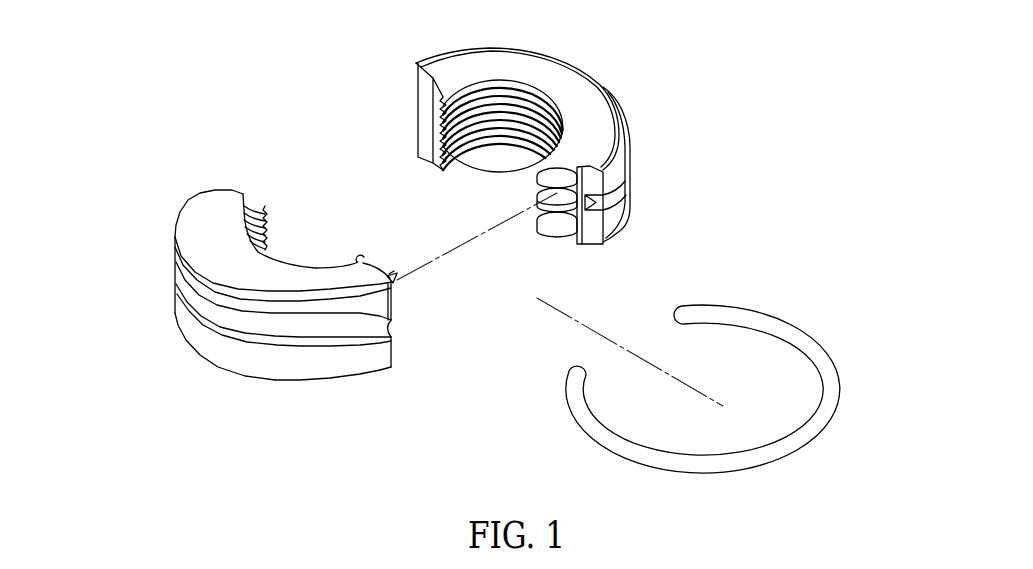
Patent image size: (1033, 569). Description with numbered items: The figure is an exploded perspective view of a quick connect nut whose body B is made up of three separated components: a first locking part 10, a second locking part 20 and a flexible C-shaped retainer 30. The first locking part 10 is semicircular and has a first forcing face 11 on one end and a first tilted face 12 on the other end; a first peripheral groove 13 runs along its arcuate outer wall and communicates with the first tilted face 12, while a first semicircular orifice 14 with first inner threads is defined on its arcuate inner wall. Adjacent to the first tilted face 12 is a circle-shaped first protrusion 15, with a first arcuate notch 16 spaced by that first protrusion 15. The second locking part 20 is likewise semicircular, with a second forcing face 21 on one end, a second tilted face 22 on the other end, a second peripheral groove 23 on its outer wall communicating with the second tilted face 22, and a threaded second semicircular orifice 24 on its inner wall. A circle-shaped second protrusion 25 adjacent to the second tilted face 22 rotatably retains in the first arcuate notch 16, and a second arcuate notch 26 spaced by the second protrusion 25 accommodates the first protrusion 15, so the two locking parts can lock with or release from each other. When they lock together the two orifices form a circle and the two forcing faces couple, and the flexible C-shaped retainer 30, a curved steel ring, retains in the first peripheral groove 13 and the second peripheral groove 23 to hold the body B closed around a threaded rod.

The first locking part 10 is at (221, 347).
The first forcing face 11 is at (229, 189).
The first tilted face 12 is at (399, 284).
The first peripheral groove 13 is at (204, 313).
The first semicircular orifice 14 is at (272, 203).
The first protrusion 15 is at (398, 278).
The first arcuate notch 16 is at (365, 262).
The second locking part 20 is at (598, 93).
The second forcing face 21 is at (418, 95).
The second tilted face 22 is at (592, 235).
The second peripheral groove 23 is at (622, 193).
The second semicircular orifice 24 is at (513, 108).
The second protrusion 25 is at (540, 174).
The second arcuate notch 26 is at (553, 201).
The flexible C-shaped retainer 30 is at (773, 452).
The body B is at (748, 78).